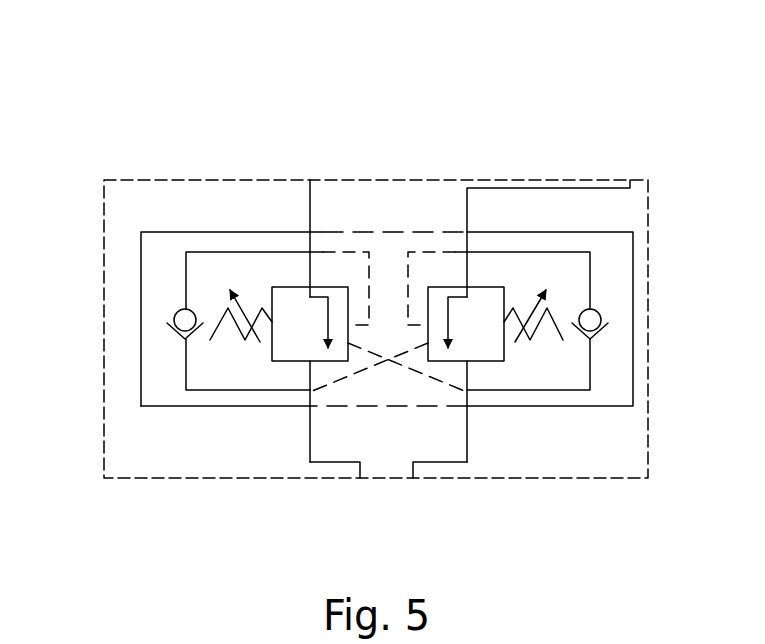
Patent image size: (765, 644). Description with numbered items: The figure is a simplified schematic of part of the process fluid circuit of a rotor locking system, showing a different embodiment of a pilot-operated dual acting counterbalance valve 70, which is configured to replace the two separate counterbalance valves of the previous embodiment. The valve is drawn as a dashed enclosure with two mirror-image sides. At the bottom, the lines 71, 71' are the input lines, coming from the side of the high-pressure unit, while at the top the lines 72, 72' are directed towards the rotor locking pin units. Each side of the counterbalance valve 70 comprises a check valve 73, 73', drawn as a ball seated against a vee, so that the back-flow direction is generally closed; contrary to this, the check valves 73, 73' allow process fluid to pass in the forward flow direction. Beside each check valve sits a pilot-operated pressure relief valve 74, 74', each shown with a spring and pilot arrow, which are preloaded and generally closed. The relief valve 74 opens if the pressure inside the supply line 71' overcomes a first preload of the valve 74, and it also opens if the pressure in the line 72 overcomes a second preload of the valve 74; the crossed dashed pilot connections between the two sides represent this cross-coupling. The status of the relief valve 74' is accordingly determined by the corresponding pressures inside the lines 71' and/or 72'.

The pilot-operated dual acting counterbalance valve 70 is at (273, 72).
The input line 71 is at (310, 508).
The input line 71' is at (468, 508).
The line 72 is at (269, 297).
The line 72' is at (548, 279).
The check valve 73 is at (118, 335).
The check valve 73' is at (639, 336).
The pilot-operated pressure relief valve 74 is at (248, 413).
The pilot-operated pressure relief valve 74' is at (526, 413).